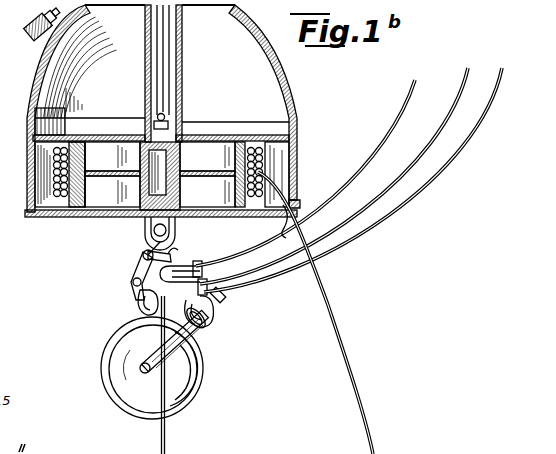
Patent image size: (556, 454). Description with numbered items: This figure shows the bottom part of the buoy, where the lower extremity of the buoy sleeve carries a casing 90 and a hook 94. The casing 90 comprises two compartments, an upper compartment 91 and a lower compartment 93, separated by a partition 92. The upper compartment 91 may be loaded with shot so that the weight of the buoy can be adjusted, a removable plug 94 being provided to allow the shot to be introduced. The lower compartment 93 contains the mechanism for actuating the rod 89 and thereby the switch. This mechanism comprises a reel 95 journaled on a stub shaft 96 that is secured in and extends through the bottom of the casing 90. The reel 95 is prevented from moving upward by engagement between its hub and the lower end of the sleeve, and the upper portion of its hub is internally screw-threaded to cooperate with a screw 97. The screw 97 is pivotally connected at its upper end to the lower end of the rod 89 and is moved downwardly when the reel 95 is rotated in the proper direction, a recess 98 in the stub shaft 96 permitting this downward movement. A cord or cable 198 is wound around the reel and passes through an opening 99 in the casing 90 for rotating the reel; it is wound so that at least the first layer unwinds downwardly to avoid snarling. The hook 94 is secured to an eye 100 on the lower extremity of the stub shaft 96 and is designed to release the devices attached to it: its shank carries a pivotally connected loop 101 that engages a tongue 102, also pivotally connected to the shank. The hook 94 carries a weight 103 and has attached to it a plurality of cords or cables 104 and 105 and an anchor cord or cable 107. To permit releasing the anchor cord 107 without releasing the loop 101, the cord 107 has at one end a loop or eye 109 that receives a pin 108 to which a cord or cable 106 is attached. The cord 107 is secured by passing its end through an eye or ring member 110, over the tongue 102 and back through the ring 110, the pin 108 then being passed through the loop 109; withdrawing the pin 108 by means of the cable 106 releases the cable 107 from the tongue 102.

The rod 89 is at (170, 25).
The casing 90 is at (63, 20).
The upper compartment 91 is at (279, 150).
The partition 92 is at (240, 135).
The lower compartment 93 is at (38, 165).
The hook 94 is at (30, 29).
The reel 95 is at (70, 207).
The stub shaft 96 is at (146, 230).
The screw 97 is at (183, 128).
The recess 98 is at (167, 168).
The opening 99 is at (283, 230).
The eye 100 is at (167, 232).
The loop 101 is at (174, 258).
The tongue 102 is at (133, 290).
The weight 103 is at (152, 368).
The cord or cable 104 is at (420, 163).
The cord or cable 105 is at (398, 218).
The cord or cable 106 is at (358, 165).
The anchor cord or cable 107 is at (168, 429).
The pin 108 is at (214, 306).
The loop or eye 109 is at (200, 327).
The eye or ring member 110 is at (169, 341).
The cord or cable 198 is at (350, 360).